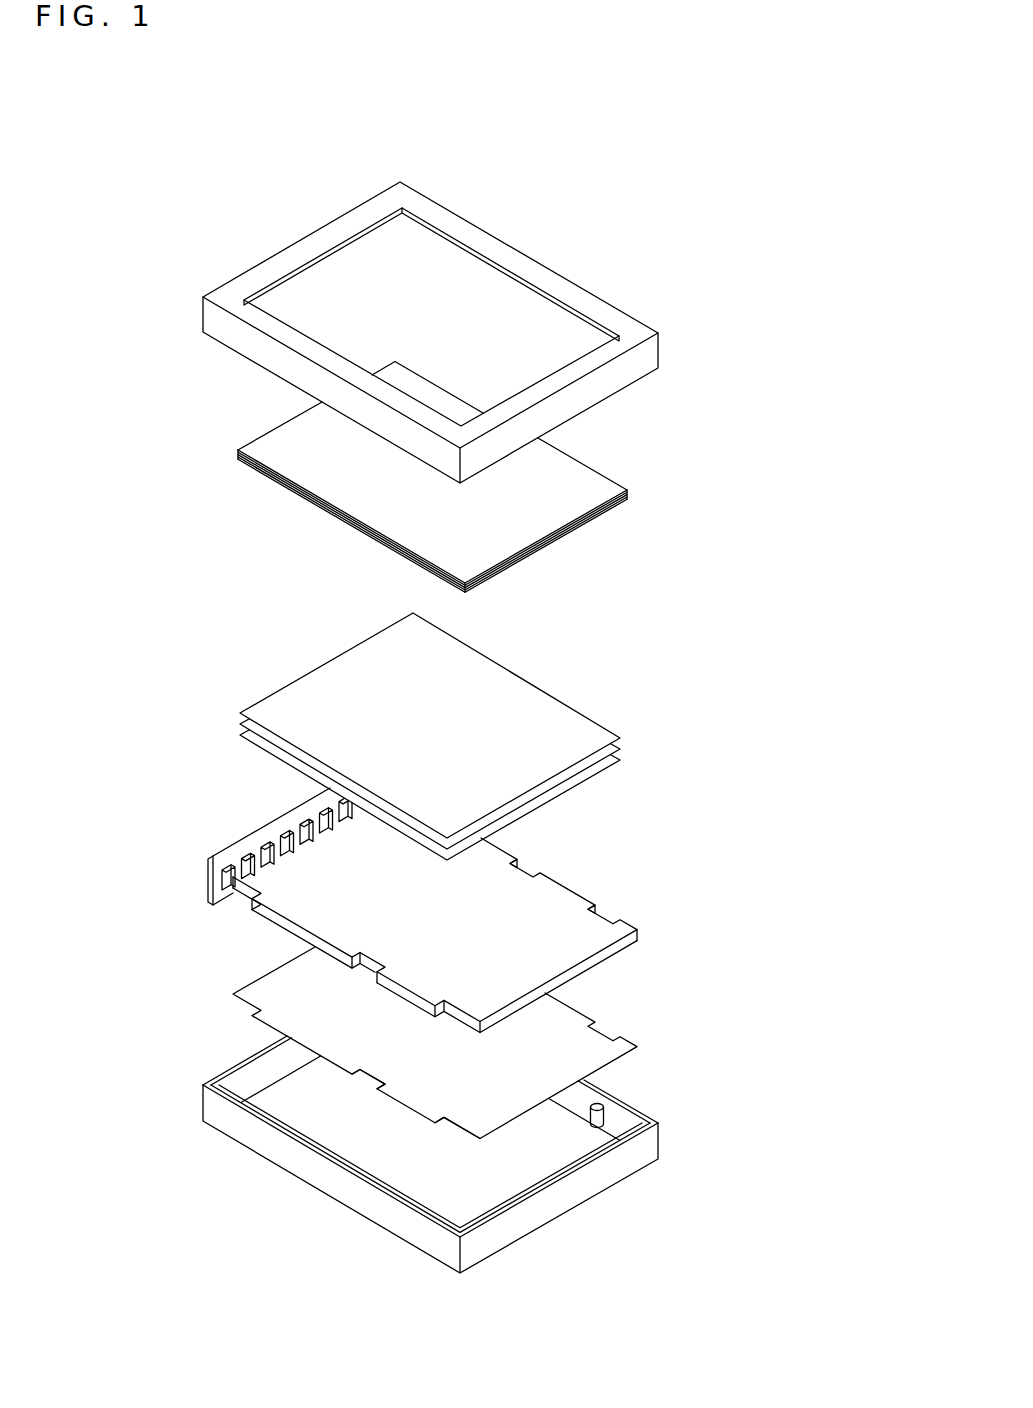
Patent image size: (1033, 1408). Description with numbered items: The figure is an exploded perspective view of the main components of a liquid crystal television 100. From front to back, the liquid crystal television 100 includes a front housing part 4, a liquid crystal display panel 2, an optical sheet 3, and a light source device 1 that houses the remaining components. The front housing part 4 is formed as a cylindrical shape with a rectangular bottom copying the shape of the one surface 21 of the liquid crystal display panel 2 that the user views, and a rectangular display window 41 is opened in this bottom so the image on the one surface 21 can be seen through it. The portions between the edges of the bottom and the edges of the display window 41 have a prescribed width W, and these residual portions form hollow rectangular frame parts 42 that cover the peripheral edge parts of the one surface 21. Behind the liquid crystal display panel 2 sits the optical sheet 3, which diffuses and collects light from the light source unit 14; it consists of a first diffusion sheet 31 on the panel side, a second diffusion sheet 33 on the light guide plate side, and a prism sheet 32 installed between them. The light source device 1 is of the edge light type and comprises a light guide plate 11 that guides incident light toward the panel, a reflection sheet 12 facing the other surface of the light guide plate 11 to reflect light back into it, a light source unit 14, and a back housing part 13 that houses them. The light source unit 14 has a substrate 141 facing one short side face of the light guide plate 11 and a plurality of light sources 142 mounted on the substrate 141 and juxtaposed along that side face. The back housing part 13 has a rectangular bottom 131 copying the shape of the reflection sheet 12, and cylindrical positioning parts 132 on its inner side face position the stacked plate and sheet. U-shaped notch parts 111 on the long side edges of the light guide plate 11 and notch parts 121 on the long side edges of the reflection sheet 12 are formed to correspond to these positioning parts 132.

The liquid crystal television 100 is at (710, 132).
The light source device 1 is at (100, 770).
The liquid crystal display panel 2 is at (229, 450).
The one surface 21 is at (593, 487).
The optical sheet 3 is at (710, 667).
The first diffusion sheet 31 is at (603, 731).
The prism sheet 32 is at (622, 744).
The second diffusion sheet 33 is at (607, 767).
The front housing part 4 is at (203, 310).
The display window 41 is at (494, 259).
The frame parts 42 is at (438, 214).
The prescribed width W is at (522, 313).
The light guide plate 11 is at (612, 952).
The notch parts 111 is at (460, 1015).
The reflection sheet 12 is at (597, 1063).
The notch parts 121 is at (612, 1037).
The back housing part 13 is at (659, 1140).
The bottom 131 is at (308, 1122).
The positioning parts 132 is at (603, 1113).
The light source unit 14 is at (247, 832).
The substrate 141 is at (208, 855).
The light sources 142 is at (305, 812).